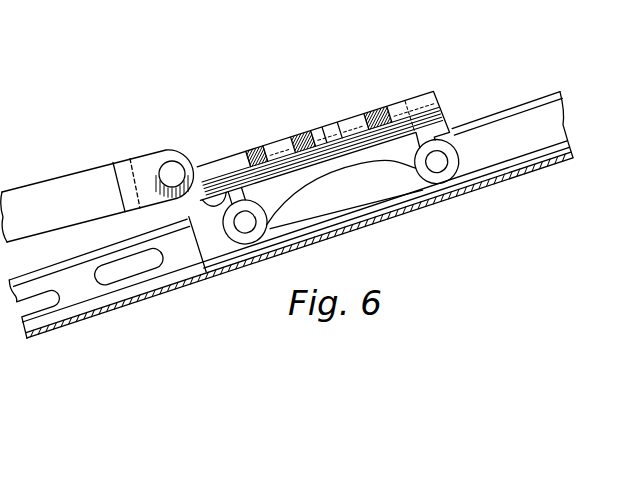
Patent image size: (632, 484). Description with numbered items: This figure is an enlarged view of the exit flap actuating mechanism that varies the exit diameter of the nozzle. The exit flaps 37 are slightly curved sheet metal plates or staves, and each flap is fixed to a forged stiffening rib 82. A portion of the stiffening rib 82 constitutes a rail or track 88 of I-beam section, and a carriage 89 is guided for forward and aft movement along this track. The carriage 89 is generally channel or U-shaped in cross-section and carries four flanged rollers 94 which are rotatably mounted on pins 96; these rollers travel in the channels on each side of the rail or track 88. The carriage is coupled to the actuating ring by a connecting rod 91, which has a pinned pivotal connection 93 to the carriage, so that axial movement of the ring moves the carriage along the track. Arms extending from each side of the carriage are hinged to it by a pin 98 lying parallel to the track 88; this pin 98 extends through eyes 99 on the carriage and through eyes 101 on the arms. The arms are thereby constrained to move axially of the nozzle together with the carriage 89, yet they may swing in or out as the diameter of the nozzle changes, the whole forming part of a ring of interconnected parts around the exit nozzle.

The stiffening rib 82 is at (92, 288).
The rail or track 88 is at (525, 123).
The exit flaps 37 is at (562, 160).
The connecting rod 91 is at (54, 184).
The pinned pivotal connection 93 is at (171, 171).
The eyes 99 is at (226, 158).
The pin 98 is at (314, 149).
The eyes 101 is at (290, 135).
The pins 96 is at (245, 222).
The flanged rollers 94 is at (224, 245).
The carriage 89 is at (362, 173).